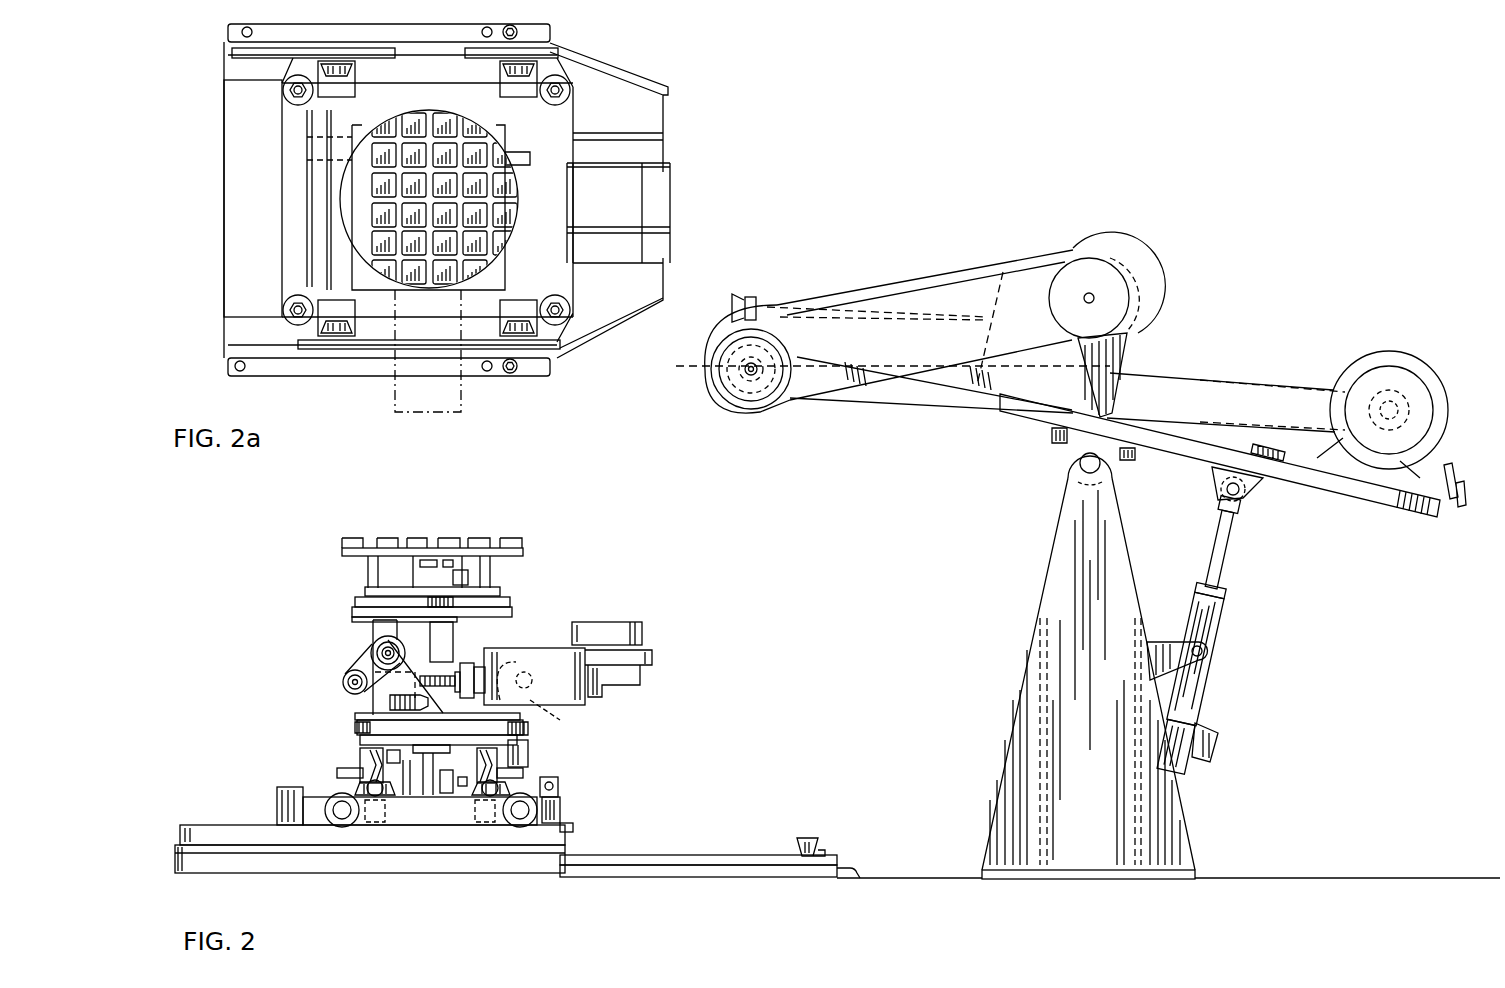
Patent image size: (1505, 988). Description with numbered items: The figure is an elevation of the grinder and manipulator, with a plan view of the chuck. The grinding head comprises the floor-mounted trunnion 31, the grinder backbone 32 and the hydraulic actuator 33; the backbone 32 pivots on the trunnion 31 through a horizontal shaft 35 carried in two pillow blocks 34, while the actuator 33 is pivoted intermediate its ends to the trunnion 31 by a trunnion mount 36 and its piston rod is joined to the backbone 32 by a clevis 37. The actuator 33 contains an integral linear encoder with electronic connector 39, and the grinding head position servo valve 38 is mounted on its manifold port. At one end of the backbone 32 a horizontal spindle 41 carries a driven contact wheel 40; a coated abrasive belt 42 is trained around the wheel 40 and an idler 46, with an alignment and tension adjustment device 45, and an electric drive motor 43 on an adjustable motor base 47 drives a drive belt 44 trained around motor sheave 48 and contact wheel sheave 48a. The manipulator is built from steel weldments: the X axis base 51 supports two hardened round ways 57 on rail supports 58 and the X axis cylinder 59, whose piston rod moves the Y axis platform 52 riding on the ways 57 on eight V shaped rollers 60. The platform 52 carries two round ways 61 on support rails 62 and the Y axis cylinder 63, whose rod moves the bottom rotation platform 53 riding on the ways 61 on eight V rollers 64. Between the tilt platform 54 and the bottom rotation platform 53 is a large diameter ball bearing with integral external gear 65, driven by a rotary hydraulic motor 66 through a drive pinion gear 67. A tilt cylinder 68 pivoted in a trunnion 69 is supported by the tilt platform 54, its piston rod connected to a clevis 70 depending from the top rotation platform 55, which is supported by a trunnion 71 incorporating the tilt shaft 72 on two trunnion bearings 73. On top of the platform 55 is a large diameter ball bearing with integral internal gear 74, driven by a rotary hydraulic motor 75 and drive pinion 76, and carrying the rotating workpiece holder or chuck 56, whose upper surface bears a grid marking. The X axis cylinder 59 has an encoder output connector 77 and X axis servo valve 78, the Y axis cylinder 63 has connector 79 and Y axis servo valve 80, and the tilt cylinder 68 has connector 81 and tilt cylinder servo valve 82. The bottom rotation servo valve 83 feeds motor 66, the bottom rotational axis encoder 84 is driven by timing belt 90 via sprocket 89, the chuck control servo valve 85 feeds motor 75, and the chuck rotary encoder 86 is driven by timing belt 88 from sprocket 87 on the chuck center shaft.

In FIG. 2, the floor-mounted trunnion 31 is at (1013, 695).
In FIG. 2, the grinder backbone 32 is at (1337, 497).
In FIG. 2, the hydraulic actuator 33 is at (1222, 606).
In FIG. 2, the pillow blocks 34 is at (1060, 442).
In FIG. 2, the horizontal shaft 35 is at (1078, 468).
In FIG. 2, the trunnion mount 36 is at (1178, 632).
In FIG. 2, the clevis 37 is at (1240, 500).
In FIG. 2, the grinding head position servo valve 38 is at (1212, 748).
In FIG. 2, the electronic connector 39 is at (1180, 769).
In FIG. 2, the driven contact wheel 40 is at (722, 395).
In FIG. 2, the horizontal spindle 41 is at (751, 375).
In FIG. 2, the coated abrasive belt 42 is at (800, 398).
In FIG. 2, the electric drive motor 43 is at (1418, 353).
In FIG. 2, the drive belt 44 is at (1238, 383).
In FIG. 2, the alignment and tension adjustment device 45 is at (1128, 351).
In FIG. 2, the idler 46 is at (1088, 292).
In FIG. 2, the adjustable motor base 47 is at (1462, 490).
In FIG. 2, the motor sheave 48 is at (1386, 408).
In FIG. 2, the contact wheel sheave 48a is at (871, 368).
In FIG. 2, the X axis base 51 is at (703, 865).
In FIG. 2, the Y axis platform 52 is at (560, 812).
In FIG. 2, the bottom rotation platform 53 is at (360, 740).
In FIG. 2, the tilt platform 54 is at (355, 716).
In FIG. 2, the top rotation platform 55 is at (512, 616).
In FIG. 2a, the rotating workpiece holder or chuck 56 is at (503, 148).
In FIG. 2, the rotating workpiece holder or chuck 56 is at (521, 552).
In FIG. 2a, the hardened round ways 57 is at (240, 210).
In FIG. 2, the hardened round ways 57 is at (237, 825).
In FIG. 2, the rail supports 58 is at (225, 848).
In FIG. 2, the X axis cylinder 59 is at (738, 855).
In FIG. 2, the V shaped rollers 60 is at (573, 826).
In FIG. 2, the round ways 61 is at (367, 815).
In FIG. 2, the support rails 62 is at (362, 818).
In FIG. 2, the Y axis cylinder 63 is at (443, 767).
In FIG. 2, the V rollers 64 is at (523, 786).
In FIG. 2, the large diameter ball bearing with integral external gear 65 is at (357, 728).
In FIG. 2, the rotary hydraulic motor 66 is at (528, 757).
In FIG. 2, the drive pinion gear 67 is at (528, 731).
In FIG. 2, the tilt cylinder 68 is at (486, 662).
In FIG. 2, the trunnion 69 is at (520, 704).
In FIG. 2, the clevis 70 is at (357, 670).
In FIG. 2, the trunnion 71 is at (385, 703).
In FIG. 2, the tilt shaft 72 is at (380, 653).
In FIG. 2, the trunnion bearings 73 is at (380, 638).
In FIG. 2, the large diameter ball bearing with integral internal gear 74 is at (500, 600).
In FIG. 2, the rotary hydraulic motor 75 is at (453, 638).
In FIG. 2, the drive pinion 76 is at (435, 597).
In FIG. 2, the electronic output connector 77 is at (826, 856).
In FIG. 2, the X axis servo valve 78 is at (803, 838).
In FIG. 2, the electronic output connector 79 is at (487, 783).
In FIG. 2, the Y axis servo valve 80 is at (463, 782).
In FIG. 2, the electronic output connector 81 is at (642, 680).
In FIG. 2a, the tilt cylinder servo valve 82 is at (640, 183).
In FIG. 2, the tilt cylinder servo valve 82 is at (643, 634).
In FIG. 2, the bottom rotation servo valve 83 is at (558, 795).
In FIG. 2, the bottom rotational axis encoder 84 is at (403, 780).
In FIG. 2, the chuck control servo valve 85 is at (362, 703).
In FIG. 2, the chuck rotary encoder 86 is at (468, 576).
In FIG. 2, the sprocket 87 is at (430, 560).
In FIG. 2, the timing belt 88 is at (448, 560).
In FIG. 2, the sprocket 89 is at (453, 780).
In FIG. 2, the timing belt 90 is at (410, 793).